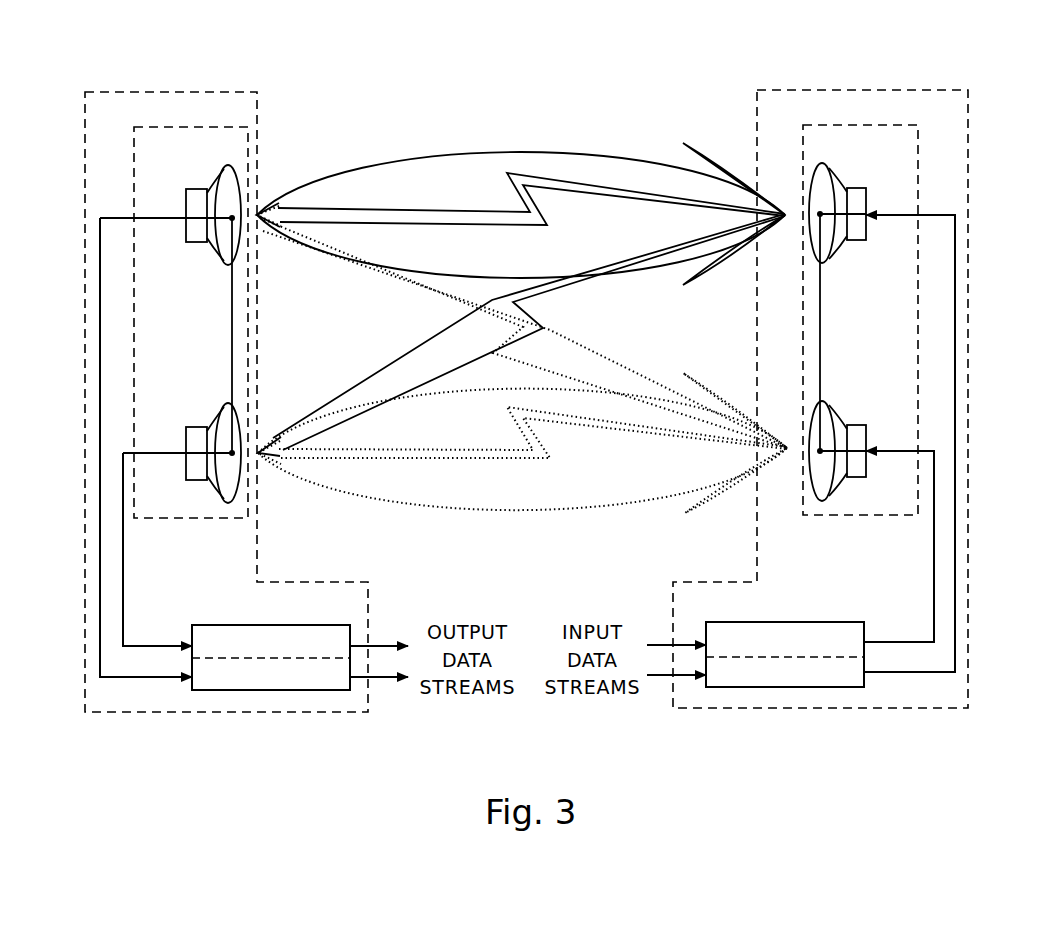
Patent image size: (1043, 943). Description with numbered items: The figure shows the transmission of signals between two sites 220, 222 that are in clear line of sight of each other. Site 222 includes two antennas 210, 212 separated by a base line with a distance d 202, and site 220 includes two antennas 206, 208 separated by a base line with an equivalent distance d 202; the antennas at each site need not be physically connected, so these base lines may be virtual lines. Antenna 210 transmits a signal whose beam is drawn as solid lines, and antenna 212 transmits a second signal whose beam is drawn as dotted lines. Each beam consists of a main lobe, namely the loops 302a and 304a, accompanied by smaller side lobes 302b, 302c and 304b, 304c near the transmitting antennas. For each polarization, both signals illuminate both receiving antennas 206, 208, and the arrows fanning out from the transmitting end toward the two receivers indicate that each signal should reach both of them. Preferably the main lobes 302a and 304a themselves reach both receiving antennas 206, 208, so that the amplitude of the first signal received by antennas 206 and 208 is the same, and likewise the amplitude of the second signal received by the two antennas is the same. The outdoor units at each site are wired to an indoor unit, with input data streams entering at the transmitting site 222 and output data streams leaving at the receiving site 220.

The distance d 202 is at (232, 333).
The antenna 206 is at (186, 189).
The antenna 208 is at (192, 427).
The antenna 210 is at (857, 188).
The antenna 212 is at (857, 425).
The site 220 is at (218, 92).
The site 222 is at (913, 90).
The main lobe loop of beam 302 302a is at (552, 155).
The side lobe of beam 302 302b is at (707, 143).
The side lobe of beam 302 302c is at (722, 268).
The main lobe loop of beam 304 304a is at (493, 510).
The side lobe of beam 304 304b is at (715, 510).
The side lobe of beam 304 304c is at (723, 383).